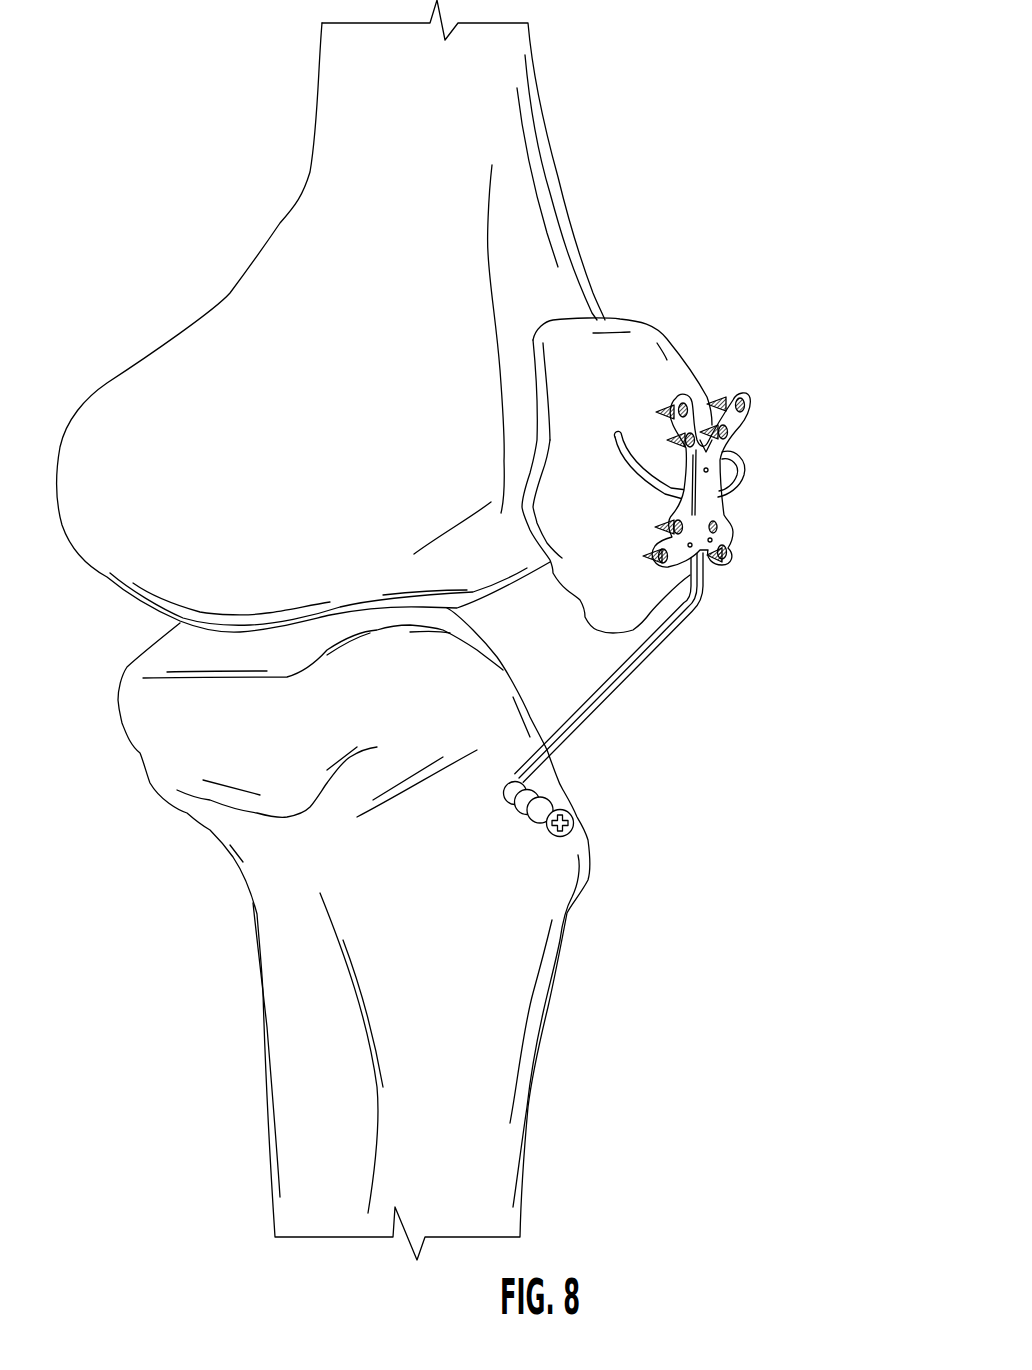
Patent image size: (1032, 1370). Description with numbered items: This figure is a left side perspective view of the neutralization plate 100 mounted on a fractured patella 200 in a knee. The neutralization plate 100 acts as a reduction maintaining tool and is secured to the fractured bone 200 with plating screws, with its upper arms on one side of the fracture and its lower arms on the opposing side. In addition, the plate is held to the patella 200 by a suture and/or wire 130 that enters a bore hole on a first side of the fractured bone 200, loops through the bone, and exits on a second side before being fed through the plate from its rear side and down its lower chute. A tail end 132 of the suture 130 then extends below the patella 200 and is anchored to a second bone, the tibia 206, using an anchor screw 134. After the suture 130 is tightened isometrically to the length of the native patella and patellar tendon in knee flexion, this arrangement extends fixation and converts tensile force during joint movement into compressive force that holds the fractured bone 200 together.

The neutralization plate 100 is at (805, 512).
The suture and/or wire 130 is at (620, 456).
The tail end 132 is at (620, 675).
The anchor screw 134 is at (573, 830).
The fractured bone (patella) 200 is at (640, 343).
The tibia (second bone) 206 is at (495, 1052).